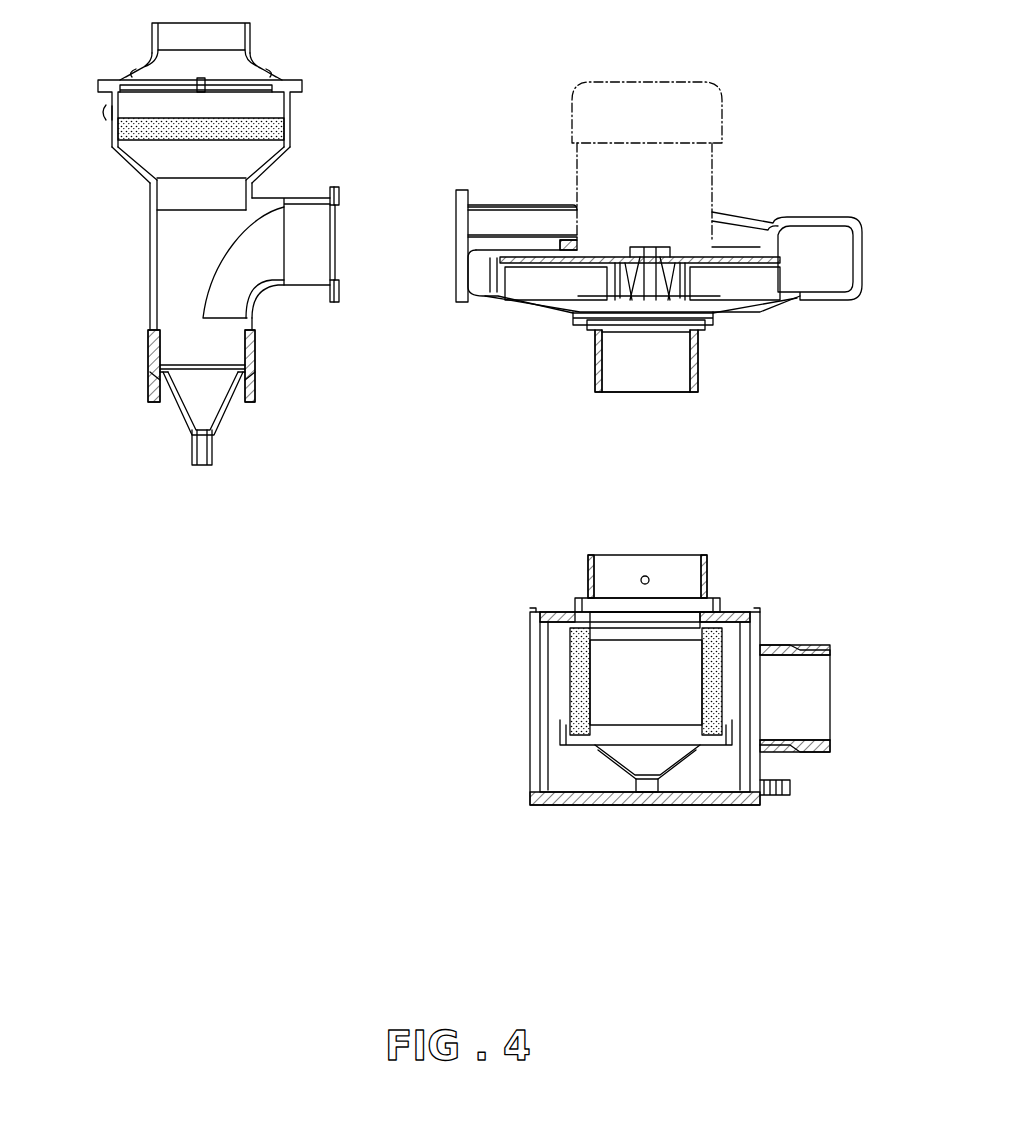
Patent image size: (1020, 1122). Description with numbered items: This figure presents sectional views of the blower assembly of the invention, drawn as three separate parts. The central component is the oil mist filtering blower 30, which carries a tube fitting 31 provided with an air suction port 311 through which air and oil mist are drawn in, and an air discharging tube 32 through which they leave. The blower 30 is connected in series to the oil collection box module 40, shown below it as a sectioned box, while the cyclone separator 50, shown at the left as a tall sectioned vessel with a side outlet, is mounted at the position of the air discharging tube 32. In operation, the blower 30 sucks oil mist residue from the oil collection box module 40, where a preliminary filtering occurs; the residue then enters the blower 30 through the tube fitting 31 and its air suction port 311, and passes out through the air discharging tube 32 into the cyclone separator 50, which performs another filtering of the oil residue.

The oil mist filtering blower 30 is at (770, 172).
The tube fitting 31 is at (588, 357).
The air suction port 311 is at (663, 373).
The air discharging tube 32 is at (479, 214).
The oil collection box module 40 is at (506, 692).
The cyclone separator 50 is at (140, 271).